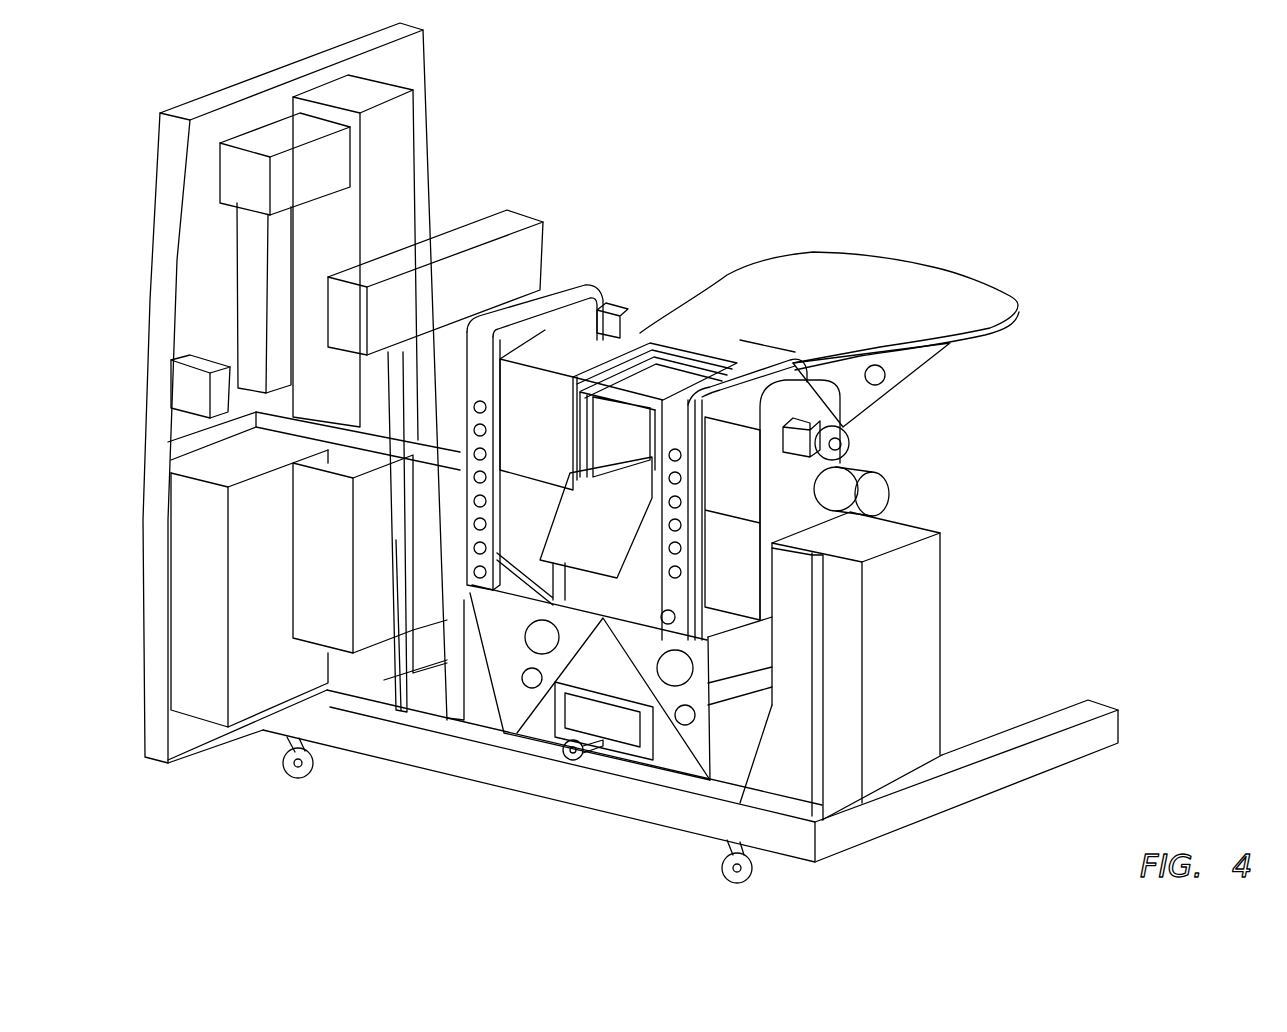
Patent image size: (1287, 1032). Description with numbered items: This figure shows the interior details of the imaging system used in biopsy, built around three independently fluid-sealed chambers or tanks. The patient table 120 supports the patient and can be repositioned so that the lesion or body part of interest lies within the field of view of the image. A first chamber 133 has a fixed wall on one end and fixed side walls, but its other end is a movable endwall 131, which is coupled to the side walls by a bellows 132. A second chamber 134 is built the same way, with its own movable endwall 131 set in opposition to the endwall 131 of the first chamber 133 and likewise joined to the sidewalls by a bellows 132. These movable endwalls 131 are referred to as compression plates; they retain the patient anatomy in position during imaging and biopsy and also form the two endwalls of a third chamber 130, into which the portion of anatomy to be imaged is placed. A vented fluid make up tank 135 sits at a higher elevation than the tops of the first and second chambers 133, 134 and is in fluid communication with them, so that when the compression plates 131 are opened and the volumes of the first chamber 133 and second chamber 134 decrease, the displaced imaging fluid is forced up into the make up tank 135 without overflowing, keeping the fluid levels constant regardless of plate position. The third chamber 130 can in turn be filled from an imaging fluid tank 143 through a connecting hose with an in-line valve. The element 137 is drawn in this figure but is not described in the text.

The patient table 120 is at (930, 267).
The third chamber 130 is at (707, 347).
The movable endwall 131 is at (657, 380).
The bellows 132 is at (640, 325).
The first chamber 133 is at (760, 390).
The second chamber 134 is at (533, 413).
The vented fluid make up tank 135 is at (465, 308).
The deflector plate 137 is at (630, 477).
The imaging fluid tank 143 is at (920, 640).